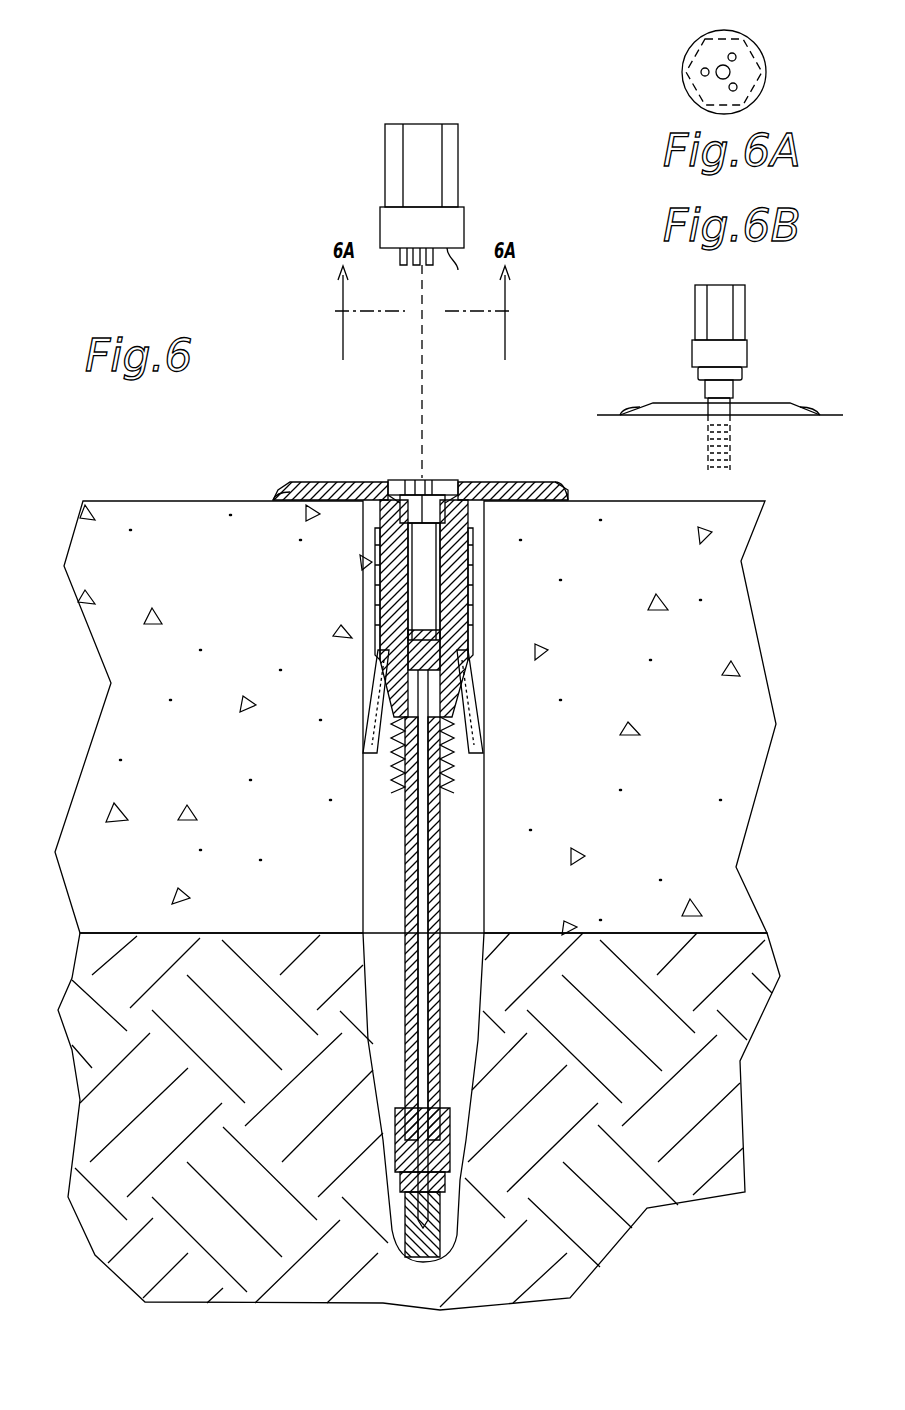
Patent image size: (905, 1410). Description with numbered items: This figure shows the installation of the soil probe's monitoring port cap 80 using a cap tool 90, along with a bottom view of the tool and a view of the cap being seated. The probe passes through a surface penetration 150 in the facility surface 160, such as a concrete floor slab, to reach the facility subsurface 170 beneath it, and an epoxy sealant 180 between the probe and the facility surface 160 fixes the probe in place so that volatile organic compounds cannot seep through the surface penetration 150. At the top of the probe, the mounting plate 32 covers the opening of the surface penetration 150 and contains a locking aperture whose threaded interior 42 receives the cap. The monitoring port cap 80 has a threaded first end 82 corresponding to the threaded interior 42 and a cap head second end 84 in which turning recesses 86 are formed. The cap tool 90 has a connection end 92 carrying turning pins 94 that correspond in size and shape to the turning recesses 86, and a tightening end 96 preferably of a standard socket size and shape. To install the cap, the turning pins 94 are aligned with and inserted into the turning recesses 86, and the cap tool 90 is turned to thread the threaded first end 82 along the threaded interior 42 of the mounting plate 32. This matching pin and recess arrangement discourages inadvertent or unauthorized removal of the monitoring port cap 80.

In FIG. 6, the mounting plate 32 is at (325, 482).
In FIG. 6B, the mounting plate 32 is at (660, 403).
In FIG. 6, the threaded interior 42 is at (440, 657).
In FIG. 6, the monitoring port cap 80 is at (395, 543).
In FIG. 6B, the monitoring port cap 80 is at (733, 392).
In FIG. 6, the threaded first end 82 is at (432, 600).
In FIG. 6B, the threaded first end 82 is at (735, 460).
In FIG. 6B, the cap head second end 84 is at (742, 374).
In FIG. 6, the turning recesses 86 is at (427, 480).
In FIG. 6, the cap tool 90 is at (465, 228).
In FIG. 6A, the cap tool 90 is at (690, 55).
In FIG. 6B, the cap tool 90 is at (747, 352).
In FIG. 6, the connection end 92 is at (447, 249).
In FIG. 6, the turning pins 94 is at (430, 265).
In FIG. 6A, the turning pins 94 is at (736, 58).
In FIG. 6, the tightening end 96 is at (457, 163).
In FIG. 6A, the tightening end 96 is at (768, 52).
In FIG. 6B, the tightening end 96 is at (745, 312).
In FIG. 6, the surface penetration 150 is at (373, 580).
In FIG. 6, the facility surface 160 is at (742, 524).
In FIG. 6, the facility subsurface 170 is at (717, 1061).
In FIG. 6, the epoxy sealant 180 is at (282, 492).
In FIG. 6B, the epoxy sealant 180 is at (628, 414).